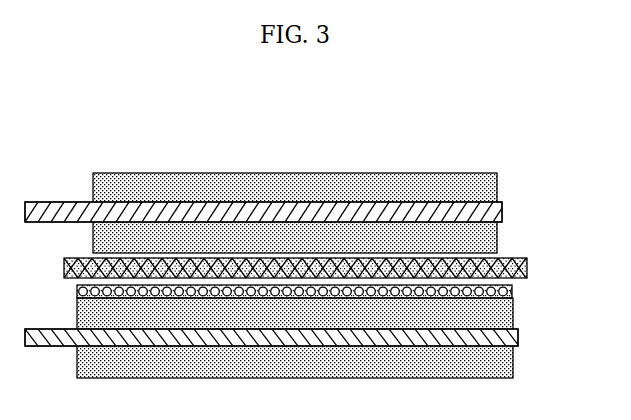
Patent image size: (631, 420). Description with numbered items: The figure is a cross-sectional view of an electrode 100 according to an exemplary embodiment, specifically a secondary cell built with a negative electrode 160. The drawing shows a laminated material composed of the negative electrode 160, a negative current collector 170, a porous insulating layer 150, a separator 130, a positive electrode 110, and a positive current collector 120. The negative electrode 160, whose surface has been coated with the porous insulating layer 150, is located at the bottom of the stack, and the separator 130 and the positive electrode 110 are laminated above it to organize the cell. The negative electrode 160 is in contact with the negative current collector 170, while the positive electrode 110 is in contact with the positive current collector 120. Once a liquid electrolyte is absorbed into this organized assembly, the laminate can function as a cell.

The electrode 100 is at (442, 134).
The positive electrode 110 is at (497, 182).
The positive current collector 120 is at (502, 212).
The separator 130 is at (527, 268).
The porous insulating layer 150 is at (512, 290).
The negative electrode 160 is at (513, 358).
The negative current collector 170 is at (518, 336).